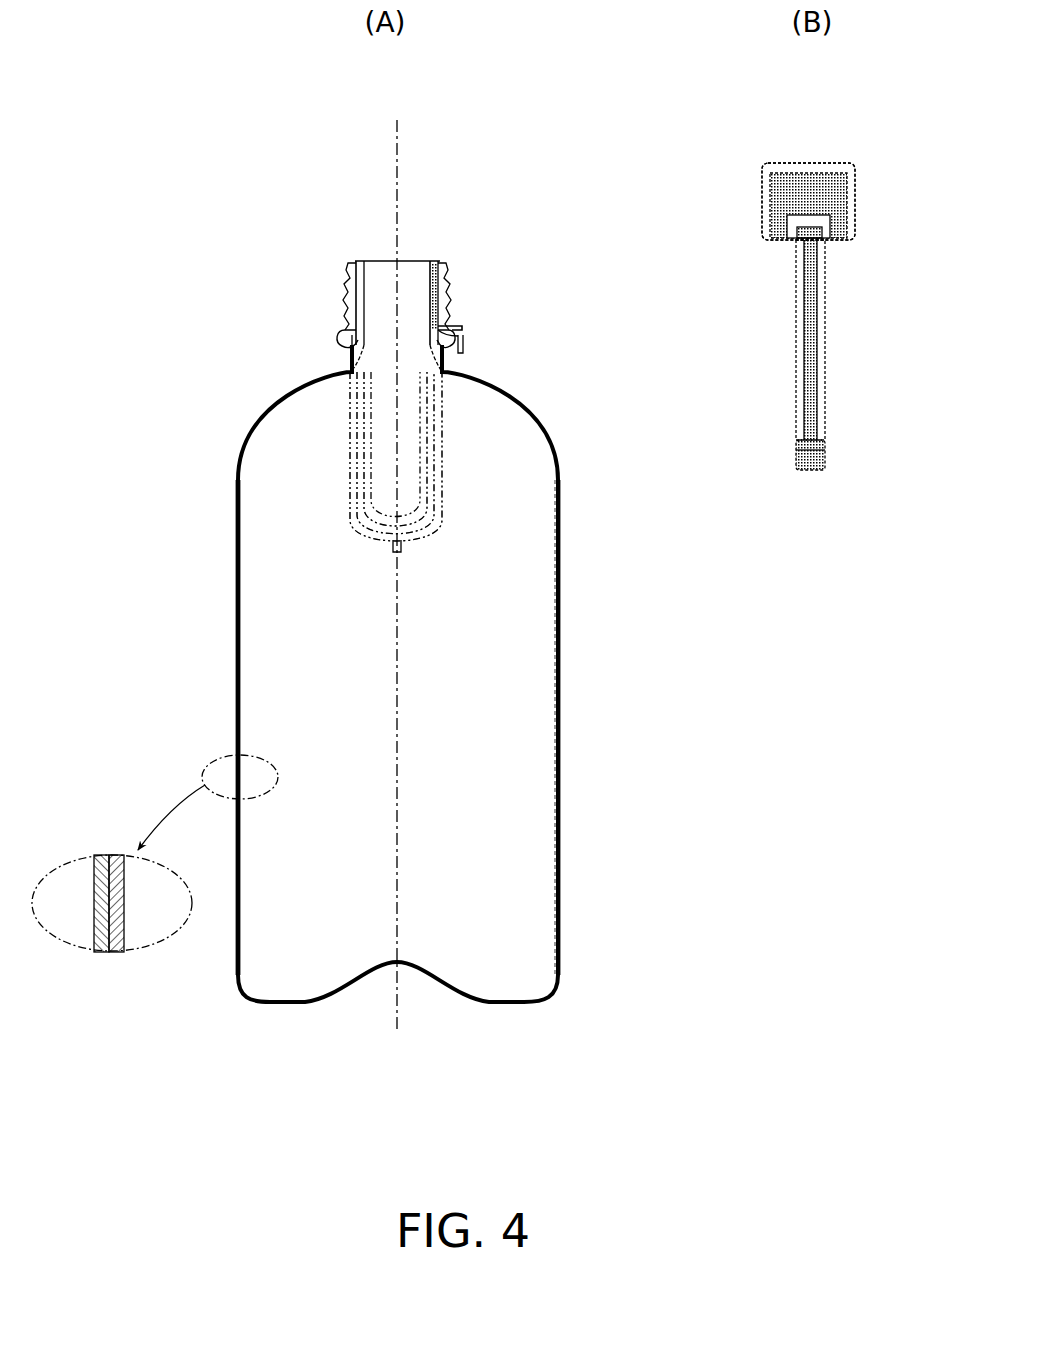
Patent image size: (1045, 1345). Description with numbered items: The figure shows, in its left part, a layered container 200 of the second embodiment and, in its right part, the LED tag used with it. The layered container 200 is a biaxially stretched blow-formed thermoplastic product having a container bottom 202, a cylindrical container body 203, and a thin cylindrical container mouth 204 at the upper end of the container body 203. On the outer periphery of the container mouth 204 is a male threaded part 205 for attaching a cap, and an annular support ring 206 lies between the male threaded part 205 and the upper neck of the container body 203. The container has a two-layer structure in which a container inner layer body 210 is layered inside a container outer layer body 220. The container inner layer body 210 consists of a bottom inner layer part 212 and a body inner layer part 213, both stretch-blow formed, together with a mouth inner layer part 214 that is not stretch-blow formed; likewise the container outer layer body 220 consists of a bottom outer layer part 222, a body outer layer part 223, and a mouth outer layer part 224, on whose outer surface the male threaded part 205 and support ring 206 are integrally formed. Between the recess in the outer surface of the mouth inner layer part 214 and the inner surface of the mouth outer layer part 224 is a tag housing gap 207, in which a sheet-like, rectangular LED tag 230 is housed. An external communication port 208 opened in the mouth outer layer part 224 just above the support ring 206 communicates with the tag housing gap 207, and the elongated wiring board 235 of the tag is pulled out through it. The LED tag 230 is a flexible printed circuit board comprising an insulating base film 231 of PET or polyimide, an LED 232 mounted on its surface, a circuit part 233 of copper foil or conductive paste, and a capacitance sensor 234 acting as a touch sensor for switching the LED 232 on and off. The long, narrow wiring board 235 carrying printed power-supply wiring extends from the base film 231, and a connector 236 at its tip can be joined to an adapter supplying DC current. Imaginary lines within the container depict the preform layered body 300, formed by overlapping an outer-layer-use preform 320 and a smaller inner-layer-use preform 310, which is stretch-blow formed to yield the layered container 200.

The layered container 200 is at (628, 477).
The container bottom 202 is at (481, 1010).
The container body 203 is at (566, 714).
The container mouth 204 is at (462, 291).
The male threaded part 205 is at (356, 291).
The support ring 206 is at (340, 341).
The tag housing gap 207 is at (418, 306).
The external communication port 208 is at (452, 323).
The container inner layer body 210 is at (542, 618).
The bottom inner layer part 212 is at (340, 981).
The body inner layer part 213 is at (122, 878).
The mouth inner layer part 214 is at (366, 305).
The container outer layer body 220 is at (575, 618).
The bottom outer layer part 222 is at (316, 1002).
The body outer layer part 223 is at (236, 672).
The mouth outer layer part 224 is at (349, 322).
The LED tag 230 is at (446, 311).
The base film 231 is at (857, 210).
The LED 232 is at (822, 240).
The circuit part 233 is at (826, 229).
The capacitance sensor 234 is at (832, 187).
The wiring board 235 is at (467, 341).
The connector 236 is at (828, 470).
The preform layered body 300 is at (494, 590).
The inner-layer-use preform 310 is at (410, 480).
The outer-layer-use preform 320 is at (447, 490).